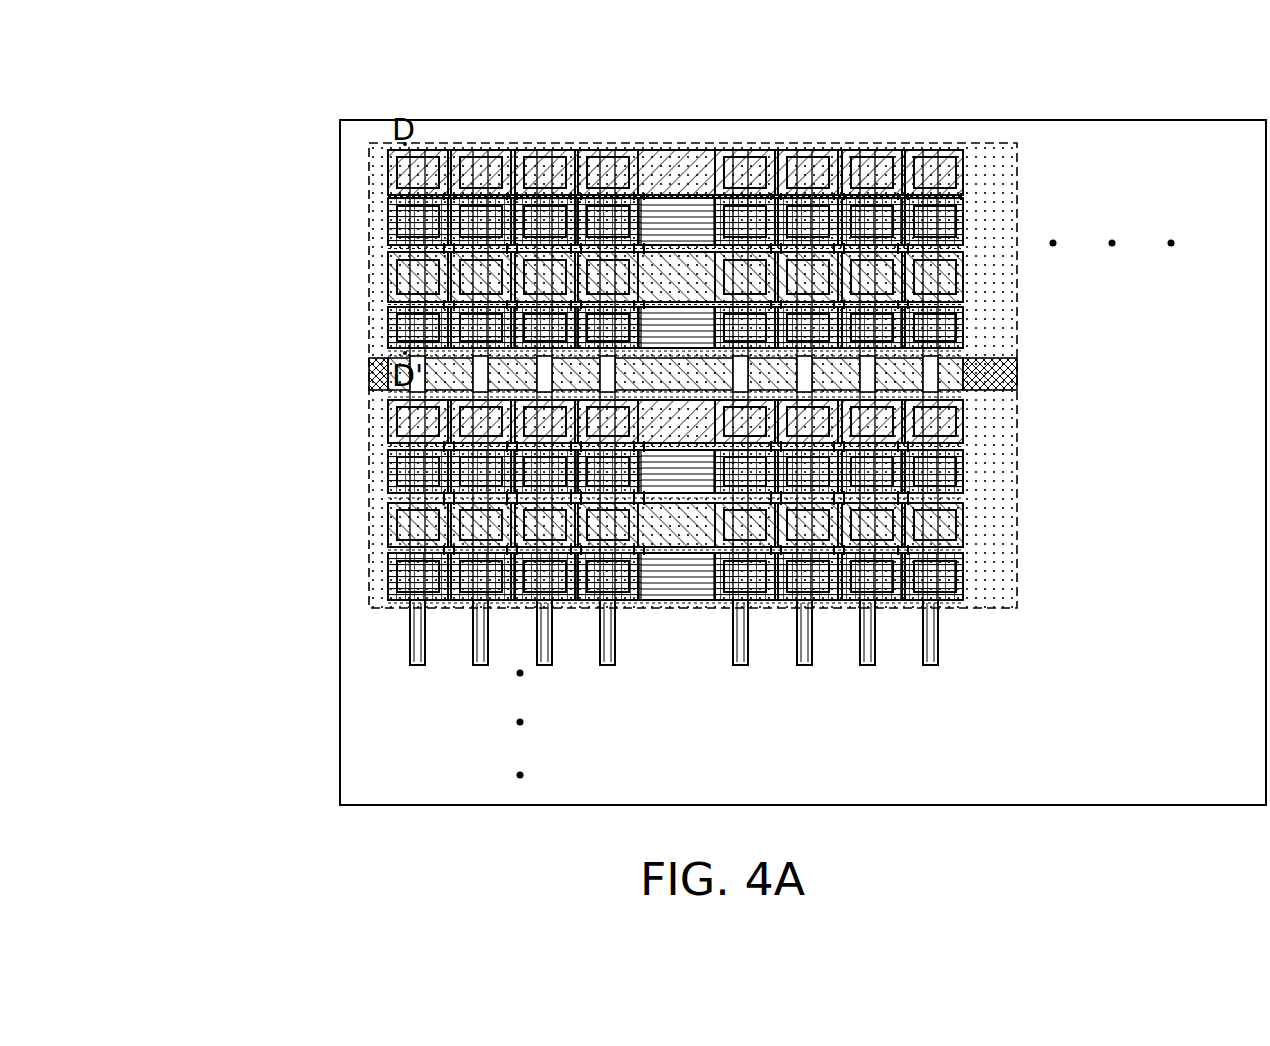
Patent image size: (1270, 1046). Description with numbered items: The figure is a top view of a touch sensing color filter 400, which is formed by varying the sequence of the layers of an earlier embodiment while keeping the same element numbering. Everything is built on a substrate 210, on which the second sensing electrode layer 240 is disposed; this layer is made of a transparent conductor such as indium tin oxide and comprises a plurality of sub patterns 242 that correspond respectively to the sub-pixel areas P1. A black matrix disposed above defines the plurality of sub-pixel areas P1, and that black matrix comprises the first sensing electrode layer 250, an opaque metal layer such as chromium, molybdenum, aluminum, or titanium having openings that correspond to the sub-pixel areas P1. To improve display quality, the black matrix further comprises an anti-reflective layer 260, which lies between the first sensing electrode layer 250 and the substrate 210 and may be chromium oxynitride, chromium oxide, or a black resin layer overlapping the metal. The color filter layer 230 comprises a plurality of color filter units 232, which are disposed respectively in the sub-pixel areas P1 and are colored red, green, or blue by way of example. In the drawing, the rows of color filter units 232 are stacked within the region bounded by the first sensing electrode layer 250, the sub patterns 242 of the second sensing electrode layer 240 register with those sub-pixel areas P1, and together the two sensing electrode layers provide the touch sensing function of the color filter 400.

The touch sensing color filter 400 is at (1264, 847).
The substrate 210 is at (352, 492).
The color filter layer 230 is at (190, 128).
The color filter unit 232 is at (390, 268).
The sub-pixel area P1 is at (397, 167).
The second sensing electrode layer 240 is at (412, 640).
The sub pattern 242 is at (952, 174).
The first sensing electrode layer 250 is at (372, 345).
The anti-reflective layer 260 is at (368, 372).